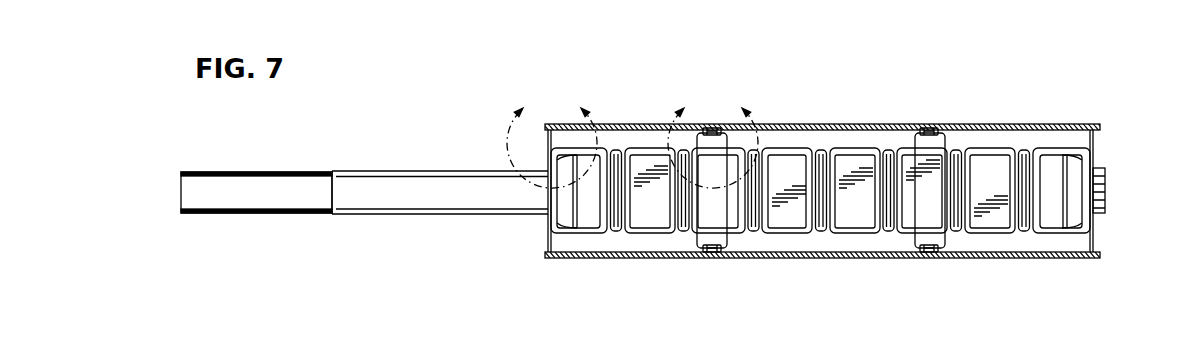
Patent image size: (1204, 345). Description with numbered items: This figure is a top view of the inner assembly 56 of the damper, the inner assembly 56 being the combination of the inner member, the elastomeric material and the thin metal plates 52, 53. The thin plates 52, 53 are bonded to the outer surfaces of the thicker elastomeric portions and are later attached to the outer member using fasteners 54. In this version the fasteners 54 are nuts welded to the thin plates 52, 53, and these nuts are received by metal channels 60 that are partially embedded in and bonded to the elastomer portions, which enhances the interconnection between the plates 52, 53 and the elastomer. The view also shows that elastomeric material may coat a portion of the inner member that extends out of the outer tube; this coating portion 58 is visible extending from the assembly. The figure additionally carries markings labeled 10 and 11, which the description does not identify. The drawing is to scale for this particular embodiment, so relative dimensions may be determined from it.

The first rotation indicator 10 is at (598, 118).
The second rotation indicator 11 is at (757, 117).
The thin metal plate 52 is at (975, 124).
The thin metal plate 53 is at (963, 258).
The fasteners 54 is at (712, 128).
The inner assembly 56 is at (364, 216).
The coating portion 58 is at (455, 171).
The metal channels 60 is at (718, 146).